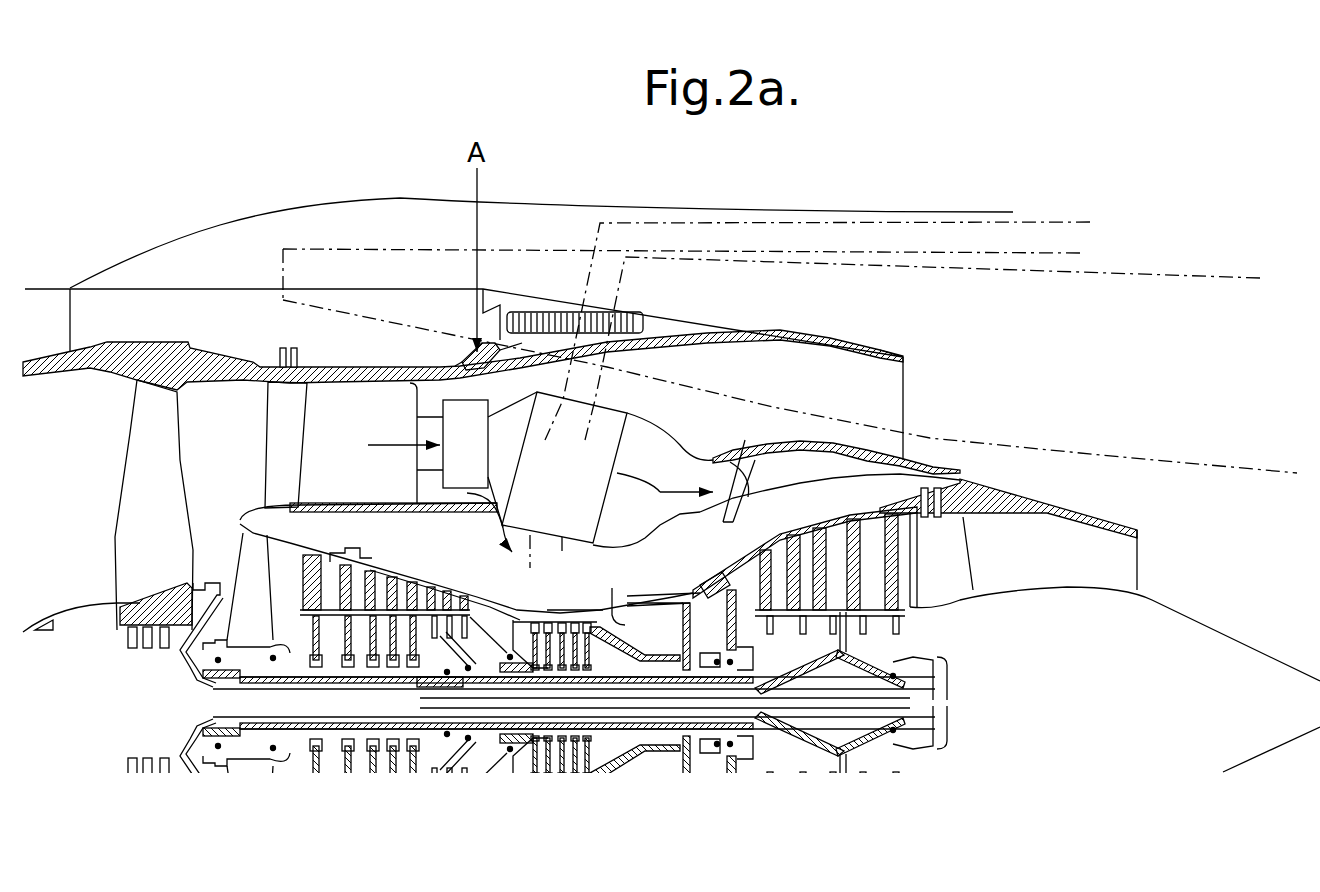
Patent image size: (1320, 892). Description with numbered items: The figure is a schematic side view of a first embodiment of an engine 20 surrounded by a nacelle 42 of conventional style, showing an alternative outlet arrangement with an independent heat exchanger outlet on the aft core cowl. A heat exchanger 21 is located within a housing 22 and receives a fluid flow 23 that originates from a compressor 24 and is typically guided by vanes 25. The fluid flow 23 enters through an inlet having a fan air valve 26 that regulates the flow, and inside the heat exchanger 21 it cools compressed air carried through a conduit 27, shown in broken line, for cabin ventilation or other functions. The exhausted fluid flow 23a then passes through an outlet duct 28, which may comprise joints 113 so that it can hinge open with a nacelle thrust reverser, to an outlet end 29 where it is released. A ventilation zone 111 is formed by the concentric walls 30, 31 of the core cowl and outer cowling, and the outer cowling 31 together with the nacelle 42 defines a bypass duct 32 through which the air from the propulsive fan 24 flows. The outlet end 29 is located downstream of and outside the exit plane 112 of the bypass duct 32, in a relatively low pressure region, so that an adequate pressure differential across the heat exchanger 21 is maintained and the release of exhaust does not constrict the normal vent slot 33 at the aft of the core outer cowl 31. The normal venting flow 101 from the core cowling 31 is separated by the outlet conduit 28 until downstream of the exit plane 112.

The engine 20 is at (157, 699).
The heat exchanger 21 is at (581, 485).
The housing 22 is at (432, 477).
The fluid flow 23 is at (386, 442).
The exhausted fluid flow 23a is at (660, 493).
The compressor 24 is at (136, 438).
The vanes 25 is at (280, 427).
The fan air valve 26 is at (483, 455).
The conduit 27 is at (735, 240).
The outlet duct 28 is at (677, 437).
The outlet end 29 is at (961, 470).
The core cowl wall 30 is at (718, 567).
The outer cowling 31 is at (827, 441).
The bypass duct 32 is at (347, 452).
The vent slot 33 is at (1042, 488).
The nacelle 42 is at (186, 286).
The flow 101 is at (493, 513).
The ventilation zone 111 is at (787, 536).
The exit plane 112 is at (903, 387).
The joints 113 is at (745, 440).